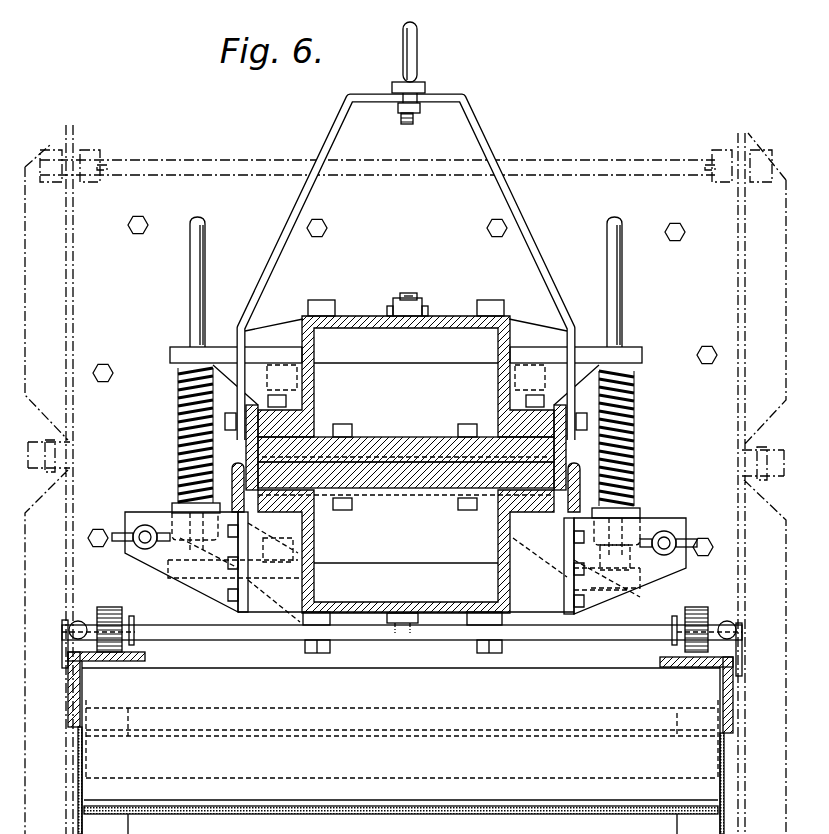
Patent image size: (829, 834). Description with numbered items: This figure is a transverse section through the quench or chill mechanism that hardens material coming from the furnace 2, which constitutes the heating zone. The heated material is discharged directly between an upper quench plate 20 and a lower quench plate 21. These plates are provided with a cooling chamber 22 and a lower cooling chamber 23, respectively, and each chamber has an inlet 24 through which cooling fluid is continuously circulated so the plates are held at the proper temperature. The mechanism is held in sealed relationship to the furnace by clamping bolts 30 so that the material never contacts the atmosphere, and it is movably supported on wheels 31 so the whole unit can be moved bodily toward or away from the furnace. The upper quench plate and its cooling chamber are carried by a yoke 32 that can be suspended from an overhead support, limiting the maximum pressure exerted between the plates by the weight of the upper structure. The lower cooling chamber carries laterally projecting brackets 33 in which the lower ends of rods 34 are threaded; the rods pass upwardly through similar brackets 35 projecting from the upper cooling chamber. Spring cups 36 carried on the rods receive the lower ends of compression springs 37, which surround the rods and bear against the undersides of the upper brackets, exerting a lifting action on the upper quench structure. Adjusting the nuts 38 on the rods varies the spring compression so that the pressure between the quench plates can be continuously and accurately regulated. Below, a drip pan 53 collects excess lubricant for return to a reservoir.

The furnace 2 is at (94, 432).
The upper quench plate 20 is at (408, 444).
The lower quench plate 21 is at (424, 481).
The cooling chamber 22 is at (406, 367).
The lower cooling chamber 23 is at (406, 551).
The inlet 24 is at (411, 299).
The clamping bolts 30 is at (127, 550).
The wheels 31 is at (105, 613).
The yoke 32 is at (304, 188).
The brackets 33 is at (183, 574).
The rods 34 is at (190, 270).
The brackets 35 is at (182, 350).
The spring cups 36 is at (182, 507).
The compression springs 37 is at (178, 406).
The nuts 38 is at (180, 528).
The drip pan 53 is at (510, 794).